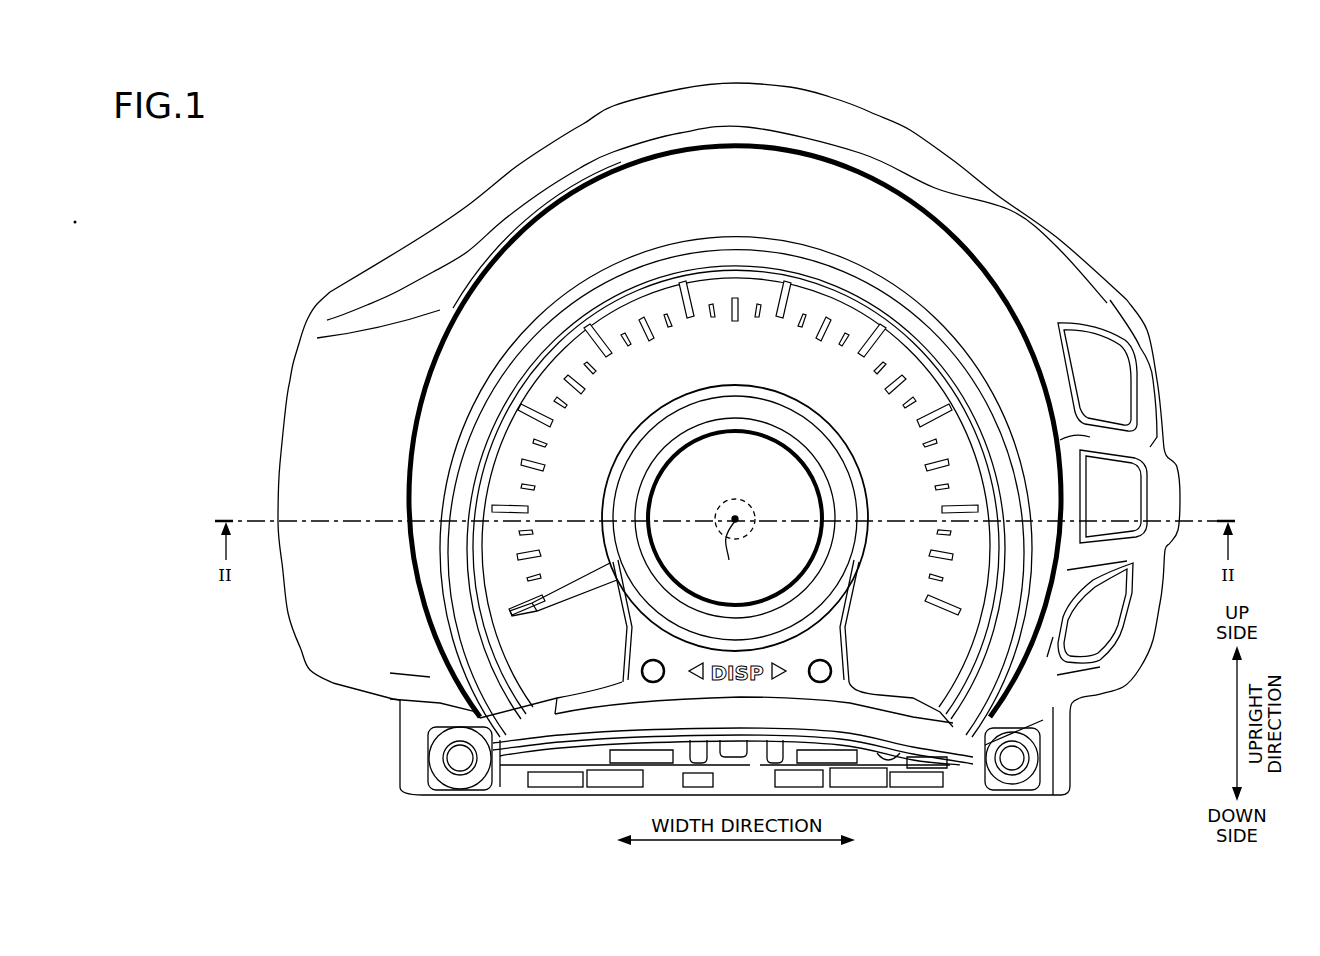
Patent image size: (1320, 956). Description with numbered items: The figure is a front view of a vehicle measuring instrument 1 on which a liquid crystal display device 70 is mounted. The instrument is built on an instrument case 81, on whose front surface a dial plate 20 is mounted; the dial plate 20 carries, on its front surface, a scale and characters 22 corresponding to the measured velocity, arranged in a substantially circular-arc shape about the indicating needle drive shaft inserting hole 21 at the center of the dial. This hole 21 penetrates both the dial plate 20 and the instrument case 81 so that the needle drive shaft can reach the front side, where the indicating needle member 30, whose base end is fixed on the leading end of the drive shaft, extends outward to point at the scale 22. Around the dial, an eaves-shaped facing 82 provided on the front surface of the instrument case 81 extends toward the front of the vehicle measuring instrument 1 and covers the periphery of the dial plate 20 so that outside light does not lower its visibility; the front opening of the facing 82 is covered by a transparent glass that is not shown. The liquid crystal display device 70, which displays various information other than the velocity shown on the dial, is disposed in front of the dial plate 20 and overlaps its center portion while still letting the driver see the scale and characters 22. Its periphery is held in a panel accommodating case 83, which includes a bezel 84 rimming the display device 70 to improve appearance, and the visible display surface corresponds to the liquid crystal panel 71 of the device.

The vehicle measuring instrument 1 is at (308, 154).
The dial plate 20 is at (686, 340).
The indicating needle drive shaft inserting hole 21 is at (748, 538).
The scale and characters 22 is at (928, 468).
The indicating needle member 30 is at (564, 581).
The liquid crystal display device 70 is at (720, 504).
The liquid crystal panel 71 is at (722, 477).
The instrument case 81 is at (1040, 295).
The facing 82 is at (921, 253).
The panel accommodating case 83 is at (795, 418).
The bezel 84 is at (803, 453).